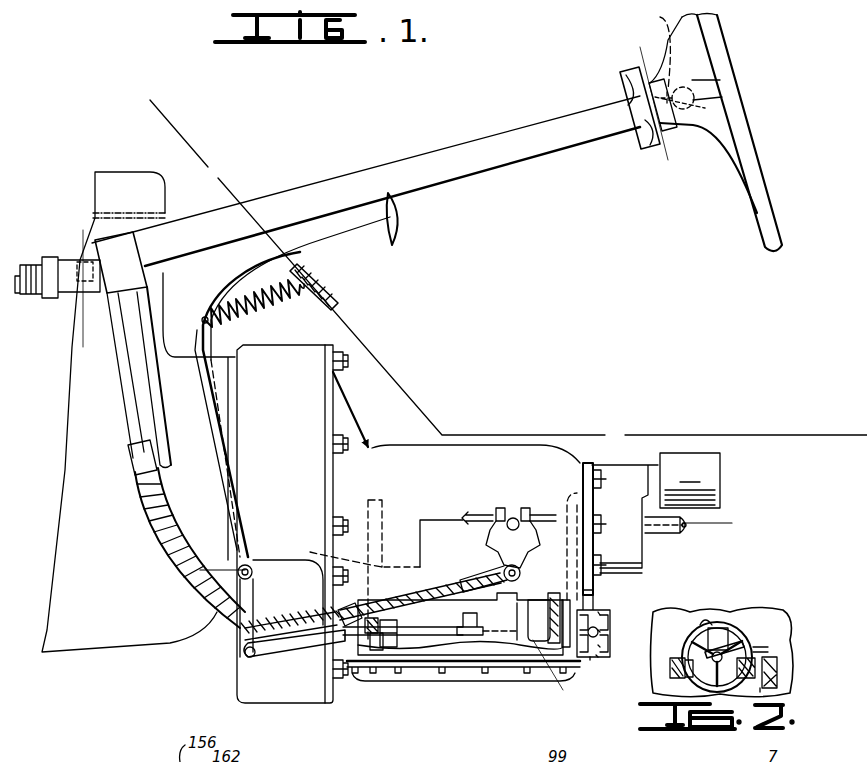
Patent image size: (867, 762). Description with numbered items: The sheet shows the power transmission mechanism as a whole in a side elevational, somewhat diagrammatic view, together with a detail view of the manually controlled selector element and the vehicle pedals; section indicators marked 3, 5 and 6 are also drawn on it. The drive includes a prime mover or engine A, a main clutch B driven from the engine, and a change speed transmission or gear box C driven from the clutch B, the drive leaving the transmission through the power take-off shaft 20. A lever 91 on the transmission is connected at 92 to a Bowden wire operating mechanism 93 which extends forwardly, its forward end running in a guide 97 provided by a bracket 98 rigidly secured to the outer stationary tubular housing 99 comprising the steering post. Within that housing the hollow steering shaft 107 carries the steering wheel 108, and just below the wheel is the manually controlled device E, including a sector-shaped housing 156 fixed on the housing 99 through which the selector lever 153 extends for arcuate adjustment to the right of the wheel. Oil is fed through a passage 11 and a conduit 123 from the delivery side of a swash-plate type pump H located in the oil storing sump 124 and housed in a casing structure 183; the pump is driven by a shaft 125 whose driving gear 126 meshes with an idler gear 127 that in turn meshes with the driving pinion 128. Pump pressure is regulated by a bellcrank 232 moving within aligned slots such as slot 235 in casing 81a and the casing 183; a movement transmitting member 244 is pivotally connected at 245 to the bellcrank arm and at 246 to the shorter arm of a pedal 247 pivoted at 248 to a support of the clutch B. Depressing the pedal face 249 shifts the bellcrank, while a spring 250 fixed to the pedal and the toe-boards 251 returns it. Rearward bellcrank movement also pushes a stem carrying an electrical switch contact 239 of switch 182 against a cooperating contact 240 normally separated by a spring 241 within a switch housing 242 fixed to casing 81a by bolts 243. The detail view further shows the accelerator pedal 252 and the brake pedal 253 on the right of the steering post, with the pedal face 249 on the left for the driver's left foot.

In FIG. 1, the hollow steering shaft 107 is at (18, 297).
In FIG. 1, the guide 97 is at (130, 470).
In FIG. 1, the bracket 98 is at (150, 378).
In FIG. 1, the outer stationary tubular housing 99 is at (182, 255).
In FIG. 2, the outer stationary tubular housing 99 is at (712, 633).
In FIG. 1, the section line 5- 5 is at (99, 205).
In FIG. 1, the engine A is at (110, 185).
In FIG. 1, the pedal face 249 is at (404, 222).
In FIG. 2, the pedal face 249 is at (672, 672).
In FIG. 1, the spring 250 is at (258, 308).
In FIG. 1, the toe-boards 251 is at (340, 297).
In FIG. 1, the selector lever 153 is at (660, 17).
In FIG. 2, the selector lever 153 is at (783, 623).
In FIG. 1, the section line 3- 3 is at (662, 42).
In FIG. 1, the manually controlled device E is at (614, 76).
In FIG. 1, the housing 156 is at (642, 140).
In FIG. 2, the housing 156 is at (725, 633).
In FIG. 1, the steering wheel 108 is at (720, 35).
In FIG. 2, the steering wheel 108 is at (738, 634).
In FIG. 1, the main clutch B is at (305, 390).
In FIG. 1, the change speed transmission C is at (380, 445).
In FIG. 1, the casing 81a is at (557, 462).
In FIG. 1, the power take-off shaft 20 is at (663, 530).
In FIG. 1, the section line 6- 6 is at (196, 548).
In FIG. 1, the driving pinion 128 is at (383, 507).
In FIG. 1, the idler gear 127 is at (308, 555).
In FIG. 1, the pedal pivot 248 is at (250, 563).
In FIG. 1, the pedal 247 is at (225, 478).
In FIG. 1, the passage 11 is at (332, 614).
In FIG. 1, the lever 91 is at (500, 548).
In FIG. 1, the connection 92 is at (522, 570).
In FIG. 1, the Bowden wire operating mechanism 93 is at (456, 588).
In FIG. 1, the pivotal connection 246 is at (242, 656).
In FIG. 1, the movement transmitting member 244 is at (283, 650).
In FIG. 1, the driving gear 126 is at (363, 653).
In FIG. 1, the shaft 125 is at (381, 650).
In FIG. 1, the swash-plate type pump H is at (457, 643).
In FIG. 1, the oil storing sump 124 is at (503, 670).
In FIG. 1, the casing structure 183 is at (490, 672).
In FIG. 1, the slot 235 is at (536, 612).
In FIG. 1, the bellcrank 232 is at (468, 615).
In FIG. 1, the pivotal connection 245 is at (450, 626).
In FIG. 1, the conduit 123 is at (565, 600).
In FIG. 1, the switch 182 is at (603, 612).
In FIG. 1, the electrical contact 240 is at (606, 618).
In FIG. 1, the spring 241 is at (608, 632).
In FIG. 1, the switch housing 242 is at (608, 647).
In FIG. 1, the electrical switch contact 239 is at (606, 656).
In FIG. 1, the bolts 243 is at (592, 660).
In FIG. 2, the accelerator pedal 252 is at (768, 649).
In FIG. 2, the pedal 253 is at (755, 692).